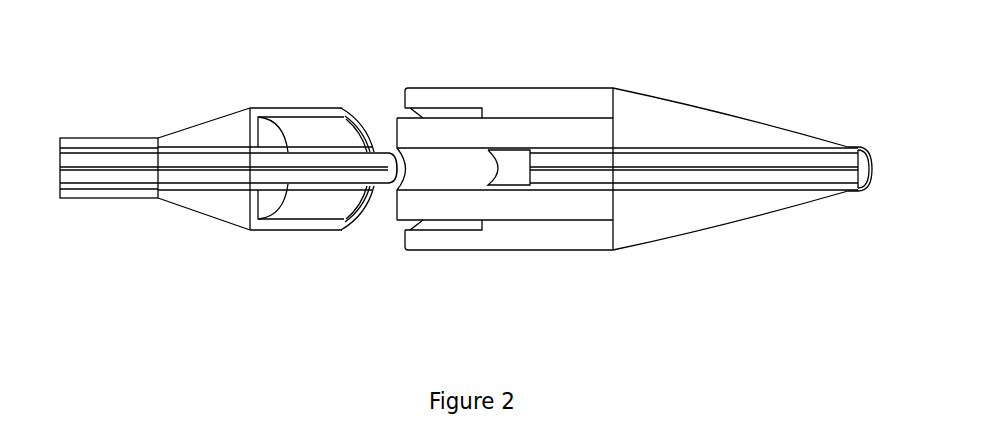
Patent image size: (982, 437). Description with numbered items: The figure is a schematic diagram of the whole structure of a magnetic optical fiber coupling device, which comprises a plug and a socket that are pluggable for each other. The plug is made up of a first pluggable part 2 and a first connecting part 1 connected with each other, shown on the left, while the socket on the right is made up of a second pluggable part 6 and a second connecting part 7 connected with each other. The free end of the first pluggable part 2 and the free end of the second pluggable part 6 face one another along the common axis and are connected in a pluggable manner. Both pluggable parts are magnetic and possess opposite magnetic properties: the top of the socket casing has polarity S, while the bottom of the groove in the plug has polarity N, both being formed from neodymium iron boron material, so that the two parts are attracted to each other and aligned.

The first connecting part 1 is at (152, 212).
The first pluggable part 2 is at (302, 242).
The second pluggable part 6 is at (512, 262).
The second connecting part 7 is at (678, 242).
The N polarity N is at (270, 143).
The S polarity S is at (402, 135).